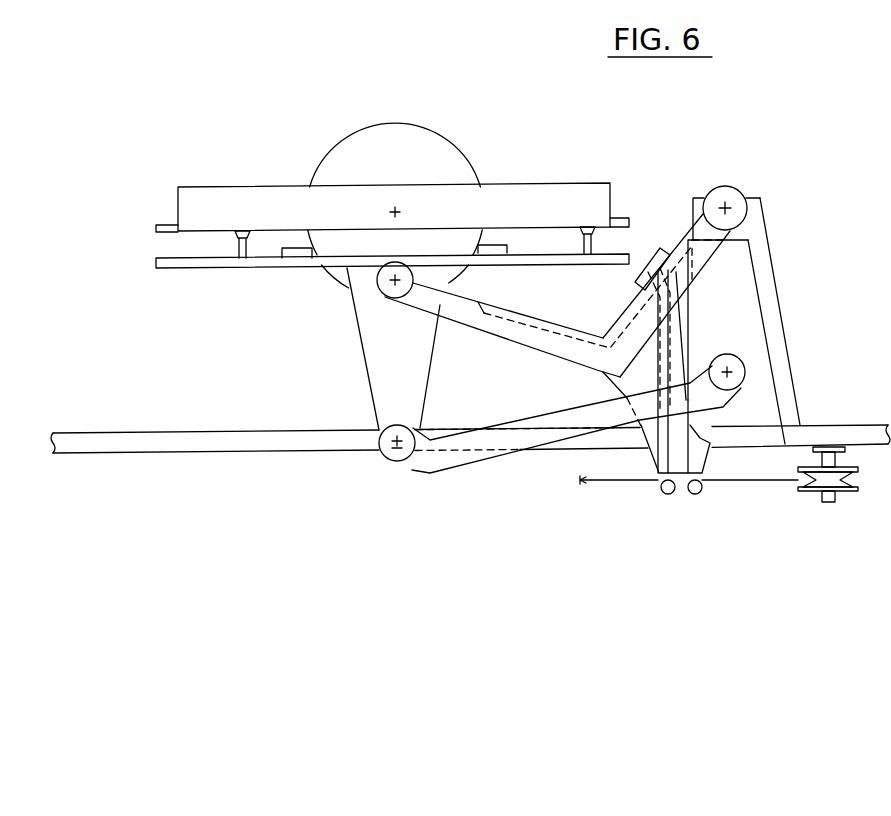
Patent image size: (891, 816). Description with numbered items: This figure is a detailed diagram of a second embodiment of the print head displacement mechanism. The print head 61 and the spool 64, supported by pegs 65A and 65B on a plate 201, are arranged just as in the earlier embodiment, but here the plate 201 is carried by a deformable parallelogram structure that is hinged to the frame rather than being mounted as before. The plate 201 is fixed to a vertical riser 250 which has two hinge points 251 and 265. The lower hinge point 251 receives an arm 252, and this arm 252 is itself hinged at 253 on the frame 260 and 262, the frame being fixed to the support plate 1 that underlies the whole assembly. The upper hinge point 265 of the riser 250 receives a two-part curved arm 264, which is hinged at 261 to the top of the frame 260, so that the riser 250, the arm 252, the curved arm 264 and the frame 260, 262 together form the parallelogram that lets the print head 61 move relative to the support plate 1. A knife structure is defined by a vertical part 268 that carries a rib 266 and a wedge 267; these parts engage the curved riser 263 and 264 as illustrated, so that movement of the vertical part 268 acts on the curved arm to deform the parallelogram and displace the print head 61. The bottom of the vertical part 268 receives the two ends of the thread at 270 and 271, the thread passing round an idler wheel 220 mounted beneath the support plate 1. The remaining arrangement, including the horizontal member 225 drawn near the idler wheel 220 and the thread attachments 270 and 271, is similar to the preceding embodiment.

The support plate 1 is at (152, 431).
The print head 61 is at (443, 148).
The spool 64 is at (237, 198).
The peg 65A is at (237, 247).
The peg 65B is at (583, 240).
The plate 201 is at (185, 268).
The idler wheel 220 is at (813, 485).
The rod 225 is at (602, 482).
The vertical riser 250 is at (367, 372).
The hinge point 251 is at (390, 458).
The arm 252 is at (525, 440).
The hinge 253 is at (745, 370).
The frame 260 is at (773, 270).
The hinge 261 is at (730, 190).
The frame 262 is at (747, 303).
The curved riser 263 is at (680, 247).
The curved arm 264 is at (507, 330).
The hinge point 265 is at (353, 287).
The rib 266 is at (620, 378).
The wedge 267 is at (643, 267).
The vertical part 268 is at (675, 350).
The thread end attachment 270 is at (665, 494).
The thread end attachment 271 is at (695, 494).